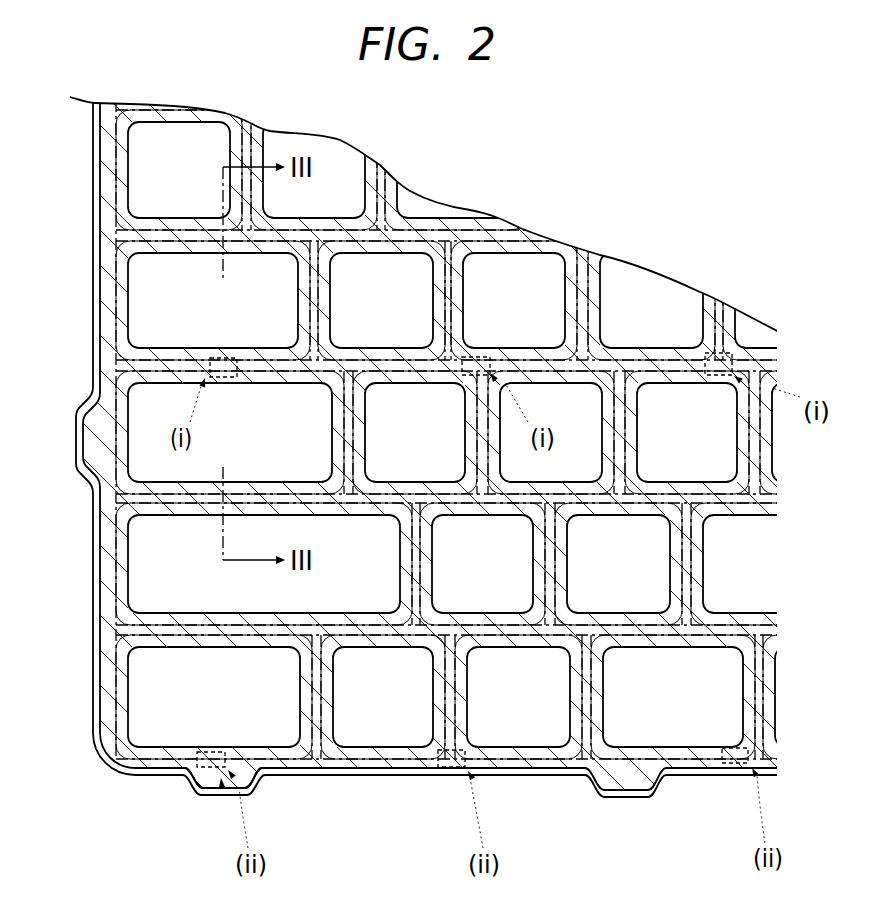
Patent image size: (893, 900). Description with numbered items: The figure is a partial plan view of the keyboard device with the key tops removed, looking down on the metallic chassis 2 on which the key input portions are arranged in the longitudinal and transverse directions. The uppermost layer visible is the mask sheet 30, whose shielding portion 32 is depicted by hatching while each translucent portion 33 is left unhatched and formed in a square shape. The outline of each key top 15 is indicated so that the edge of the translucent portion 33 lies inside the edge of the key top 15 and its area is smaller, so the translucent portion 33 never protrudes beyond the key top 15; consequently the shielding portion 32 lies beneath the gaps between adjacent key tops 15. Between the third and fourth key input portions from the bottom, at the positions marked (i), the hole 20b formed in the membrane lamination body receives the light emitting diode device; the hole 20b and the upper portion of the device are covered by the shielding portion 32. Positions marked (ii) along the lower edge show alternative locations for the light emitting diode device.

The chassis 2 is at (390, 778).
The key top 15 is at (113, 330).
The hole 20b is at (224, 379).
The mask sheet 30 is at (221, 788).
The shielding portion 32 is at (120, 229).
The translucent portion 33 is at (145, 296).